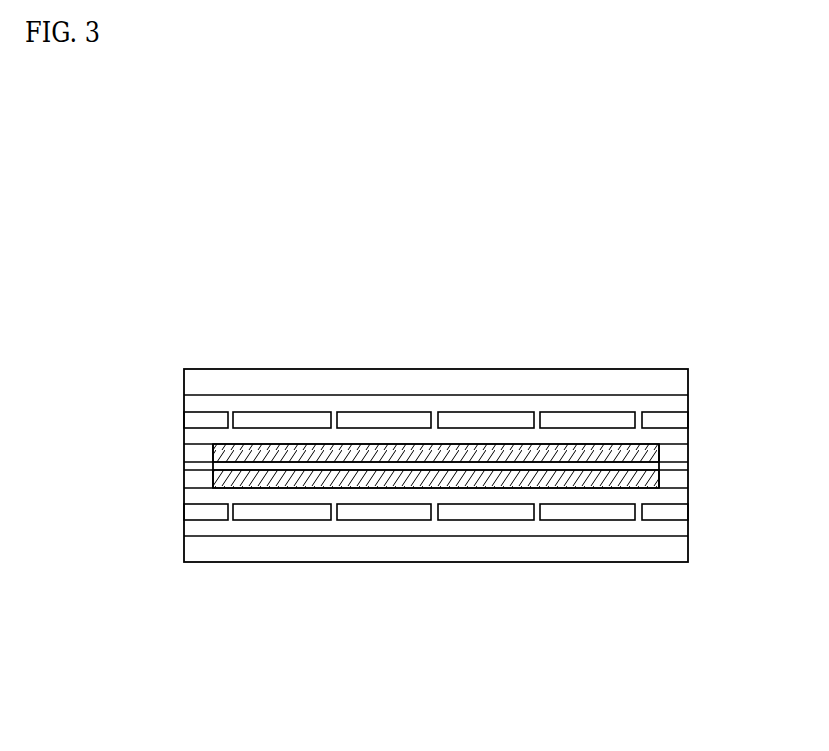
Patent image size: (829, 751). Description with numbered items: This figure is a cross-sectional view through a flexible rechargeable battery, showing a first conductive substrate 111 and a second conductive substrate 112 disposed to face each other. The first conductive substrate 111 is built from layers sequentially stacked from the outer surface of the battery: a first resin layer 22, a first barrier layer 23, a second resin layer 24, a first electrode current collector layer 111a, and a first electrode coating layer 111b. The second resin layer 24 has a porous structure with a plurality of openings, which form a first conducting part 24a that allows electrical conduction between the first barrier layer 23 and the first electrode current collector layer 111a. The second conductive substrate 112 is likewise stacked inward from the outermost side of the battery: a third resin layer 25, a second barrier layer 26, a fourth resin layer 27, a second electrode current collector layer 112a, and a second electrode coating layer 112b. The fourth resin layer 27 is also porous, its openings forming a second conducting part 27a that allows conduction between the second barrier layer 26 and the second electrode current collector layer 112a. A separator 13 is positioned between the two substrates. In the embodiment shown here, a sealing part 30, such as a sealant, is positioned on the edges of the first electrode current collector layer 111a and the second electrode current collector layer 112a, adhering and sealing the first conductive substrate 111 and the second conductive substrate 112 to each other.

The first conductive substrate 111 is at (67, 328).
The first resin layer 22 is at (198, 383).
The first barrier layer 23 is at (196, 404).
The second resin layer 24 is at (194, 420).
The first conducting part 24a is at (643, 417).
The first electrode current collector layer 111a is at (218, 438).
The first electrode coating layer 111b is at (215, 457).
The sealing part 30 is at (677, 455).
The separator 13 is at (647, 463).
The second conductive substrate 112 is at (58, 490).
The second electrode coating layer 112b is at (183, 487).
The second electrode current collector layer 112a is at (218, 495).
The fourth resin layer 27 is at (190, 515).
The second conducting part 27a is at (643, 510).
The second barrier layer 26 is at (190, 530).
The third resin layer 25 is at (188, 558).